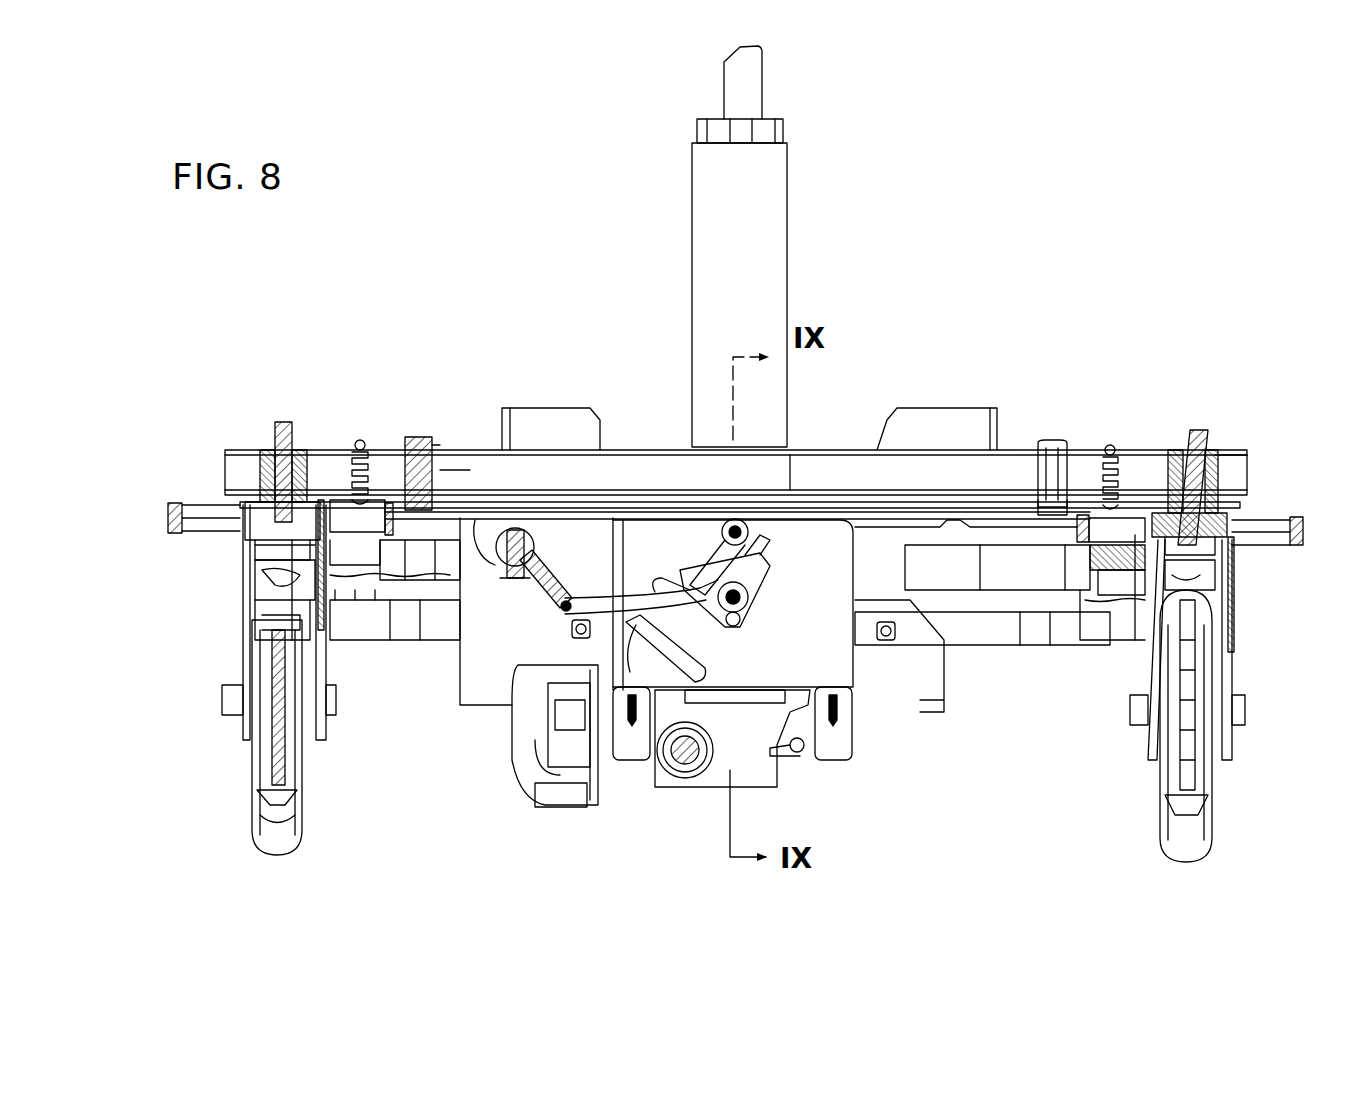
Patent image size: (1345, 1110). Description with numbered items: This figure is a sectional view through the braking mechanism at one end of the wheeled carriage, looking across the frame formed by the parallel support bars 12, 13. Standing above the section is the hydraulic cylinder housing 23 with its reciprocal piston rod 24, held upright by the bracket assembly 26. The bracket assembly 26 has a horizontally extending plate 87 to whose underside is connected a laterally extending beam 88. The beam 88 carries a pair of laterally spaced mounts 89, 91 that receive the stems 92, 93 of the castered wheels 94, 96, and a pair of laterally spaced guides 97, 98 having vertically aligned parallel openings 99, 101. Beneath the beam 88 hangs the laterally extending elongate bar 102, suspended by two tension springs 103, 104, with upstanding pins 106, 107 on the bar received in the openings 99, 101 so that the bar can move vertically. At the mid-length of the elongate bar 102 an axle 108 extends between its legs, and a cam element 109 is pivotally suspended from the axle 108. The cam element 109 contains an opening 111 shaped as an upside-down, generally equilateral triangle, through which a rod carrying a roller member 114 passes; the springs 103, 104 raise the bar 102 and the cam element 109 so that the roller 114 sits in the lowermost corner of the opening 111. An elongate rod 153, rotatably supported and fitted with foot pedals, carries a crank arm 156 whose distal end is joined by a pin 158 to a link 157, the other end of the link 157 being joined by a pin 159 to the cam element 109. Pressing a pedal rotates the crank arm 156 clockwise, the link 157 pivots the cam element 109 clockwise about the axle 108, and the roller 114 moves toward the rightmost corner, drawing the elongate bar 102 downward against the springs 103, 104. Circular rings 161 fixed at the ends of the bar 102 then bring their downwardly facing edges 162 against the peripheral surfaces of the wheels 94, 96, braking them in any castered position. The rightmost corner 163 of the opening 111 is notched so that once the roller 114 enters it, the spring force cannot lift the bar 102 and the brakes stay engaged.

The support bar 12 is at (620, 765).
The support bar 13 is at (812, 765).
The hydraulic cylinder housing 23 is at (762, 242).
The piston rod 24 is at (748, 87).
The bracket assembly 26 is at (651, 400).
The horizontally extending plate 87 is at (800, 450).
The laterally extending beam 88 is at (1232, 455).
The mount 89 is at (302, 432).
The mount 91 is at (1172, 450).
The stem 92 is at (280, 423).
The stem 93 is at (1192, 433).
The castered wheel 94 is at (250, 815).
The castered wheel 96 is at (1212, 848).
The guide 97 is at (433, 448).
The guide 98 is at (1058, 445).
The opening 99 is at (420, 438).
The opening 101 is at (1046, 470).
The elongate bar 102 is at (796, 512).
The tension spring 103 is at (355, 480).
The tension spring 104 is at (1118, 480).
The upstanding pin 106 is at (440, 469).
The upstanding pin 107 is at (1050, 485).
The axle 108 is at (744, 522).
The cam element 109 is at (716, 562).
The opening 111 is at (695, 583).
The roller member 114 is at (740, 622).
The elongate rod 153 is at (455, 612).
The crank arm 156 is at (548, 603).
The link 157 is at (620, 690).
The pin 158 is at (545, 625).
The pin 159 is at (735, 630).
The circular ring 161 is at (175, 502).
The downwardly facing edge 162 is at (175, 535).
The notched corner 163 is at (748, 598).